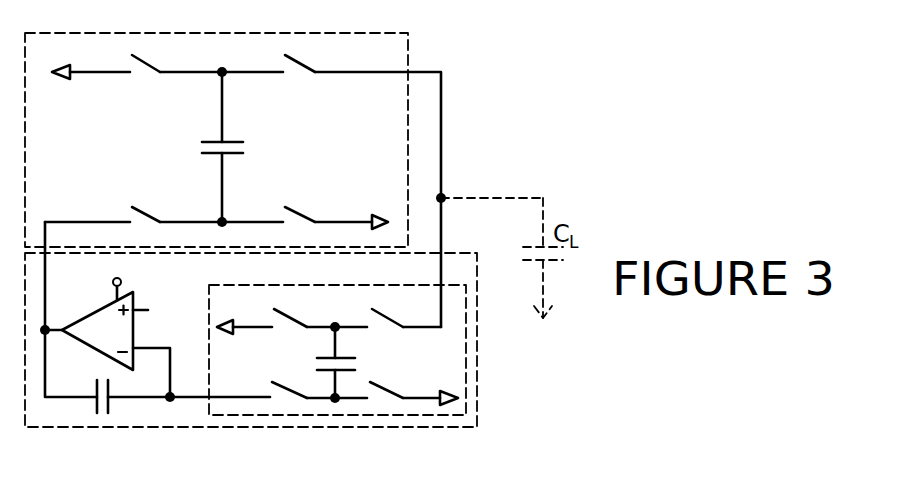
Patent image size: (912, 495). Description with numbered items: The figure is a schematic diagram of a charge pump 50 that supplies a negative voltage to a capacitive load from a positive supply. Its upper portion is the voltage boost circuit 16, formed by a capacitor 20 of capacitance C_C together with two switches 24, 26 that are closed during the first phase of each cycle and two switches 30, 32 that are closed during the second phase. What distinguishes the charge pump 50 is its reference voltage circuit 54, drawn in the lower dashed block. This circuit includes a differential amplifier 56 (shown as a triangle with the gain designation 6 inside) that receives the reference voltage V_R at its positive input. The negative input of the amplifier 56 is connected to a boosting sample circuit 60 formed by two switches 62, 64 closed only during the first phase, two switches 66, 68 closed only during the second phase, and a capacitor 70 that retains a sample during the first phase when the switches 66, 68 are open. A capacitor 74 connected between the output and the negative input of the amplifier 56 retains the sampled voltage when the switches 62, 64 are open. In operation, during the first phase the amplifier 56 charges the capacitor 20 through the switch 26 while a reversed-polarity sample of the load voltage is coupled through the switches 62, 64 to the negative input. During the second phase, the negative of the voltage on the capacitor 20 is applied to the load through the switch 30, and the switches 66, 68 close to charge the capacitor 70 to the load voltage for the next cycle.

The amplifier 6 is at (77, 285).
The voltage boost circuit 16 is at (410, 45).
The capacitor 20 is at (245, 153).
The switch 24 is at (151, 76).
The switch 26 is at (133, 206).
The switch 30 is at (303, 75).
The switch 32 is at (316, 221).
The charge pump 50 is at (505, 94).
The reference voltage circuit 54 is at (477, 365).
The differential amplifier 56 is at (120, 314).
The boosting sample circuit 60 is at (466, 330).
The switch 62 is at (283, 318).
The switch 64 is at (283, 395).
The switch 66 is at (385, 322).
The switch 68 is at (385, 400).
The capacitor 70 is at (332, 358).
The capacitor 74 is at (110, 403).